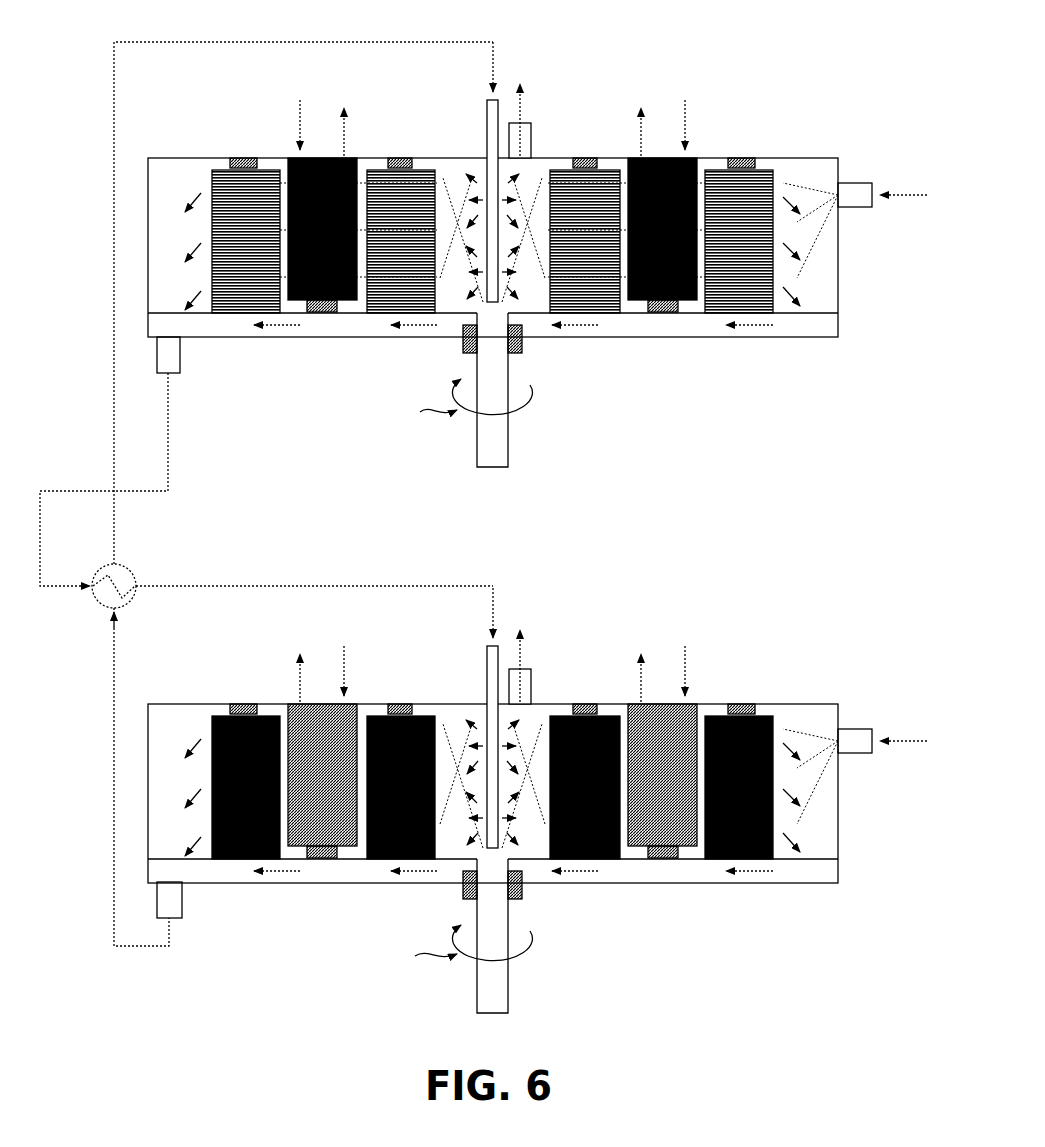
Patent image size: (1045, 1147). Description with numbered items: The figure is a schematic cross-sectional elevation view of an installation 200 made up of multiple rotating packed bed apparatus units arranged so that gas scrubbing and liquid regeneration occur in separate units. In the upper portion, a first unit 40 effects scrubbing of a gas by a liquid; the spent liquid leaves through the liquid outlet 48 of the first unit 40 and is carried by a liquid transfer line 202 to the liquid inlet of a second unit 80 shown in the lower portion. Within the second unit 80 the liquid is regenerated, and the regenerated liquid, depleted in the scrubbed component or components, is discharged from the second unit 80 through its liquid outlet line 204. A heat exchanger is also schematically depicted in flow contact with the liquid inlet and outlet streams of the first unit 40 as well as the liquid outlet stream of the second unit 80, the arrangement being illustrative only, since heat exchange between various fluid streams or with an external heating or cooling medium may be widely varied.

The first unit 40 is at (539, 244).
The liquid outlet 48 is at (186, 353).
The second unit 80 is at (801, 676).
The installation 200 is at (485, 517).
The liquid transfer line 202 is at (206, 582).
The liquid outlet line 204 is at (129, 949).